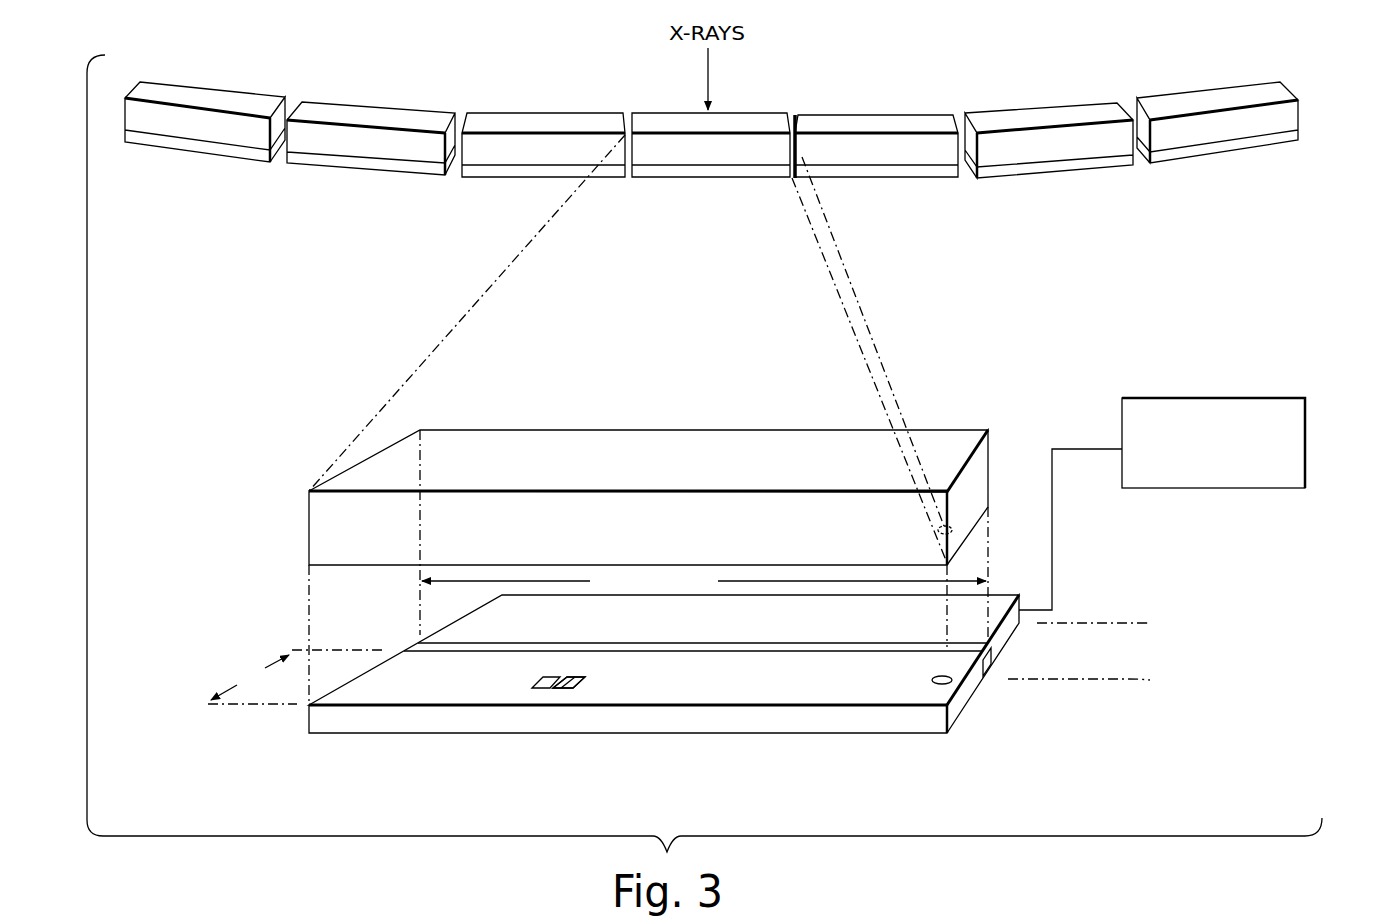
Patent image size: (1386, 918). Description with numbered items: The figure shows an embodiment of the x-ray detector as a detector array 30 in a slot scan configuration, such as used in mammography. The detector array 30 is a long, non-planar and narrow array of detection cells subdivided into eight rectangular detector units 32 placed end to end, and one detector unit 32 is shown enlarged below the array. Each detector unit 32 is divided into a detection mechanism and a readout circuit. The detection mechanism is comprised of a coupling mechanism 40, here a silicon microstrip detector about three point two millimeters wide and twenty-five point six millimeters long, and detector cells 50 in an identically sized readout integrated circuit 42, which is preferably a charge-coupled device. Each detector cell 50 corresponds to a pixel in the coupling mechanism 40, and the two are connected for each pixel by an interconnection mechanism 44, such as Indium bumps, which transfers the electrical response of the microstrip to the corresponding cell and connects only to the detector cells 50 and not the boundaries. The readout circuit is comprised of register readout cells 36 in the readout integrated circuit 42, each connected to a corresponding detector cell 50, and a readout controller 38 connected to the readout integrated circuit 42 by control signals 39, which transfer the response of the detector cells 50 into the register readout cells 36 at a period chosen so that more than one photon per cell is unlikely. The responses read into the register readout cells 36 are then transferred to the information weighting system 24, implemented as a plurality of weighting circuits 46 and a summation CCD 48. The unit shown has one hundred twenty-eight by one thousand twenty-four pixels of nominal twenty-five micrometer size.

The information weighting system 24 is at (1150, 623).
The detector array 30 is at (1303, 75).
The detector unit 32 is at (745, 99).
The register readout cell 36 is at (580, 682).
The readout controller 38 is at (1205, 398).
The control signals 39 is at (1052, 510).
The coupling mechanism 40 is at (963, 409).
The readout integrated circuit 42 is at (965, 695).
The interconnection mechanism 44 is at (937, 531).
The weighting circuits 46 is at (991, 666).
The summation CCD 48 is at (1007, 632).
The detector cell 50 is at (532, 678).